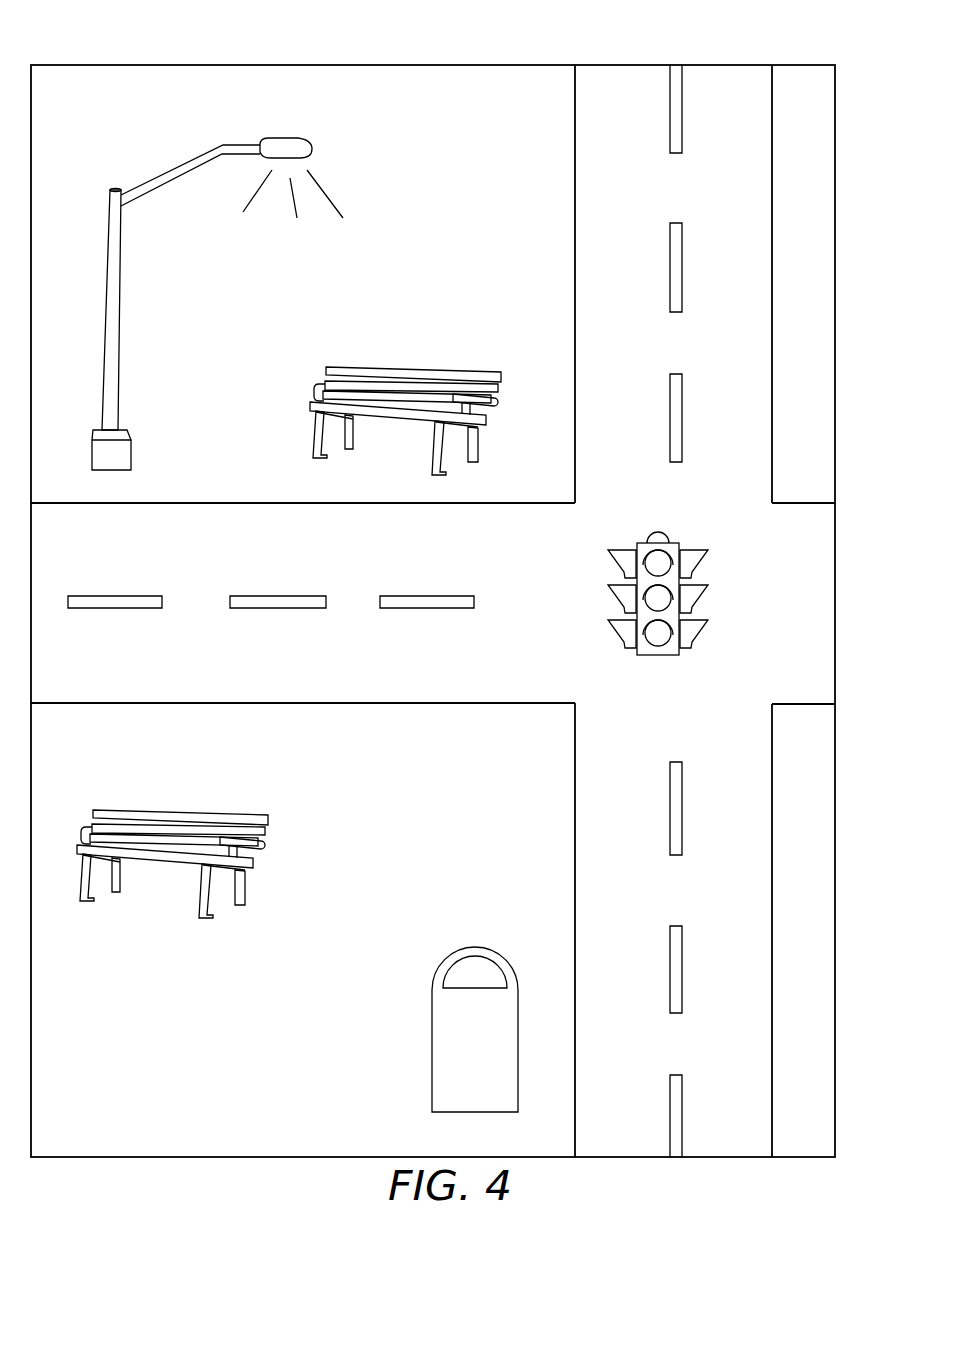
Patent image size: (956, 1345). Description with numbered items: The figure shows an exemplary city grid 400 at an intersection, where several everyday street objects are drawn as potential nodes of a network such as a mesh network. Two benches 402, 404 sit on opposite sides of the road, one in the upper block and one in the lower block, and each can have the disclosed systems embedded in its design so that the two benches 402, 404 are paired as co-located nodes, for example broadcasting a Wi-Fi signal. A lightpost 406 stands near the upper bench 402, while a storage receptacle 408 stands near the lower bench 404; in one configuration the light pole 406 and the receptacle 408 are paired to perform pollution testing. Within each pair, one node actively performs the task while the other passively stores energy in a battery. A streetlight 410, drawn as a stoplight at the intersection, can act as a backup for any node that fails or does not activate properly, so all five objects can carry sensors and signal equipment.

The exemplary city grid 400 is at (449, 63).
The bench 402 is at (419, 370).
The bench 404 is at (179, 810).
The lightpost 406 is at (120, 352).
The storage receptacle 408 is at (476, 945).
The streetlight 410 is at (700, 593).